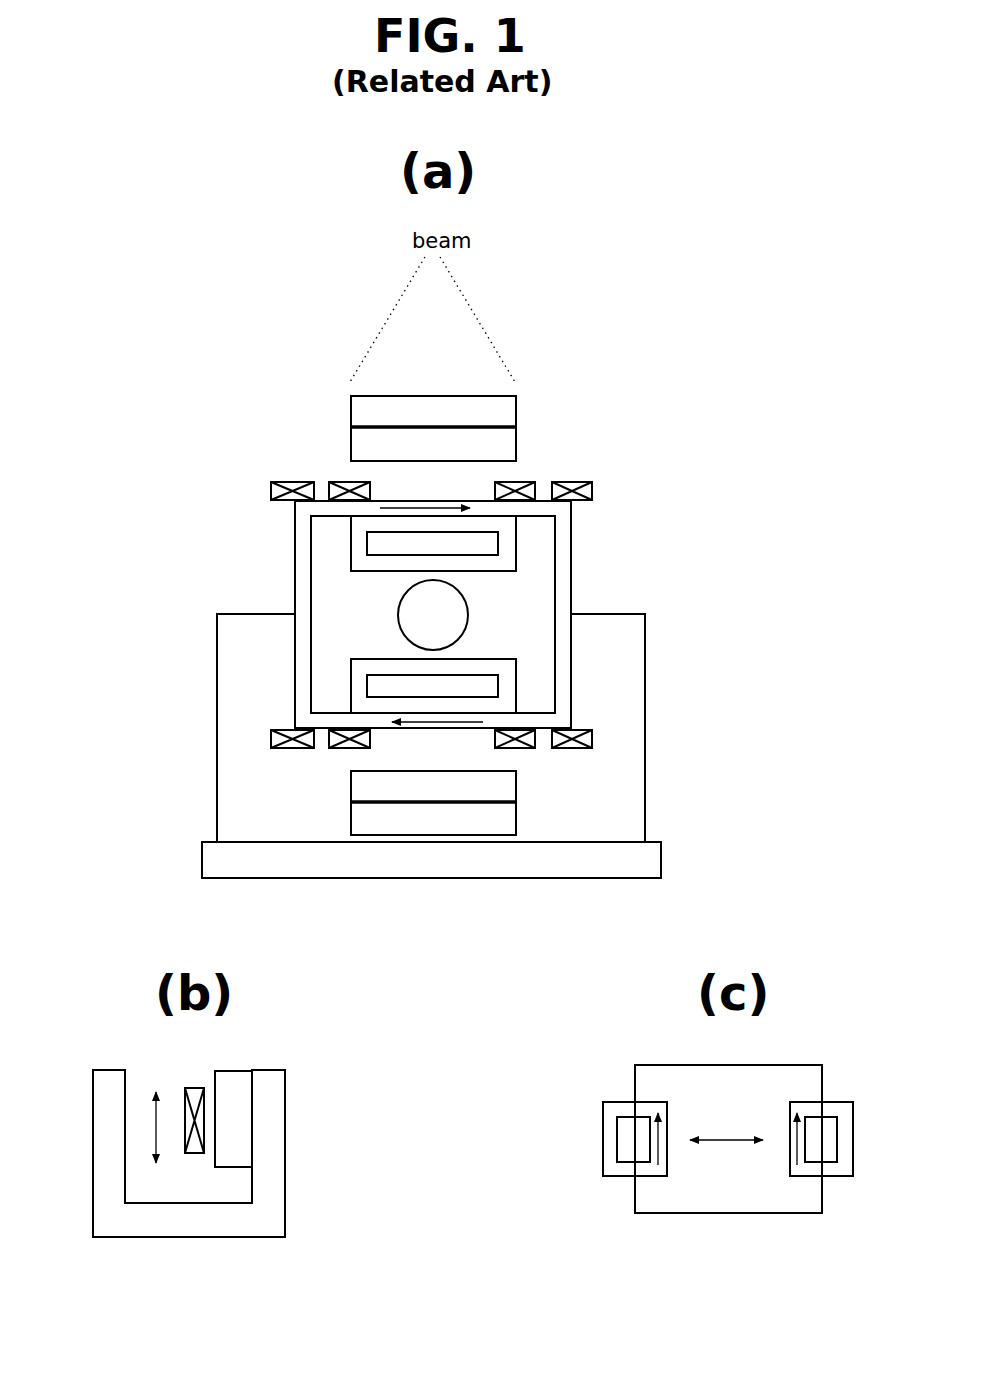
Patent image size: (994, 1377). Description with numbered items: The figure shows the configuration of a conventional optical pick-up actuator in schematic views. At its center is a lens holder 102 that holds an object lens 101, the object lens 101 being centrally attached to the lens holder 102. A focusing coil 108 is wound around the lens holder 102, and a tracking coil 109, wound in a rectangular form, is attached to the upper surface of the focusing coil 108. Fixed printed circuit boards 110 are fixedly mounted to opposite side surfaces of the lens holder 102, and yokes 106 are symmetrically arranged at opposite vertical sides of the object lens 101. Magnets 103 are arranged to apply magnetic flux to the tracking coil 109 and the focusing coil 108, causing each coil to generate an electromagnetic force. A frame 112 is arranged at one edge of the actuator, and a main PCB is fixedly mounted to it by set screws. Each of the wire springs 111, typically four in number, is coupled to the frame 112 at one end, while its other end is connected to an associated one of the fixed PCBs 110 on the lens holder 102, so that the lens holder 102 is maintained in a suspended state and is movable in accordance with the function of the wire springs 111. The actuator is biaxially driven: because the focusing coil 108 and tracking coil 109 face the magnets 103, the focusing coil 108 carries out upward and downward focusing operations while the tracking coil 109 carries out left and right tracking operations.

The object lens 101 is at (400, 602).
The lens holder 102 is at (539, 563).
The magnet 103 is at (351, 440).
The yoke 106 is at (351, 405).
The focusing coil 108 is at (573, 667).
The tracking coil 109 is at (292, 488).
The fixed printed circuit board 110 is at (573, 610).
The wire spring 111 is at (647, 782).
The frame 112 is at (662, 858).